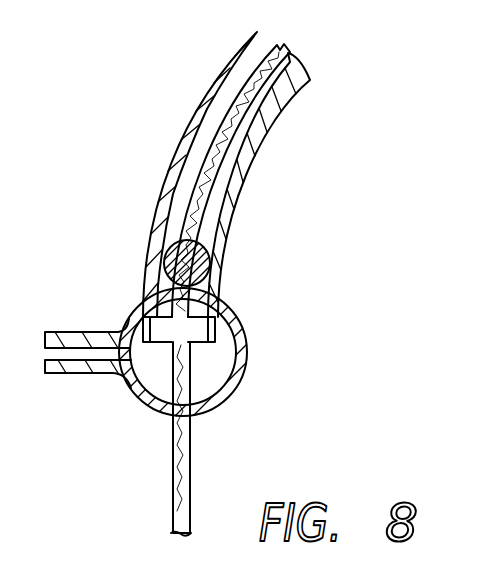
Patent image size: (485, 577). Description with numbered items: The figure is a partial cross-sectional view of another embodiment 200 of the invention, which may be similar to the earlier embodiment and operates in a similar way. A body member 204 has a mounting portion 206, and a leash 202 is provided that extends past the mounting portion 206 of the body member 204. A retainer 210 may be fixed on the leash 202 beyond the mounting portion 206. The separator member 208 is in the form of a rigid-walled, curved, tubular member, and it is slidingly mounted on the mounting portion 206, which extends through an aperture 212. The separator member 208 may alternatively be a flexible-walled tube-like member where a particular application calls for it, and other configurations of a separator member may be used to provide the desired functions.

The embodiment 200 is at (342, 163).
The leash 202 is at (287, 50).
The body member 204 is at (247, 352).
The mounting portion 206 is at (218, 398).
The separator member 208 is at (167, 181).
The retainer 210 is at (202, 263).
The aperture 212 is at (223, 284).